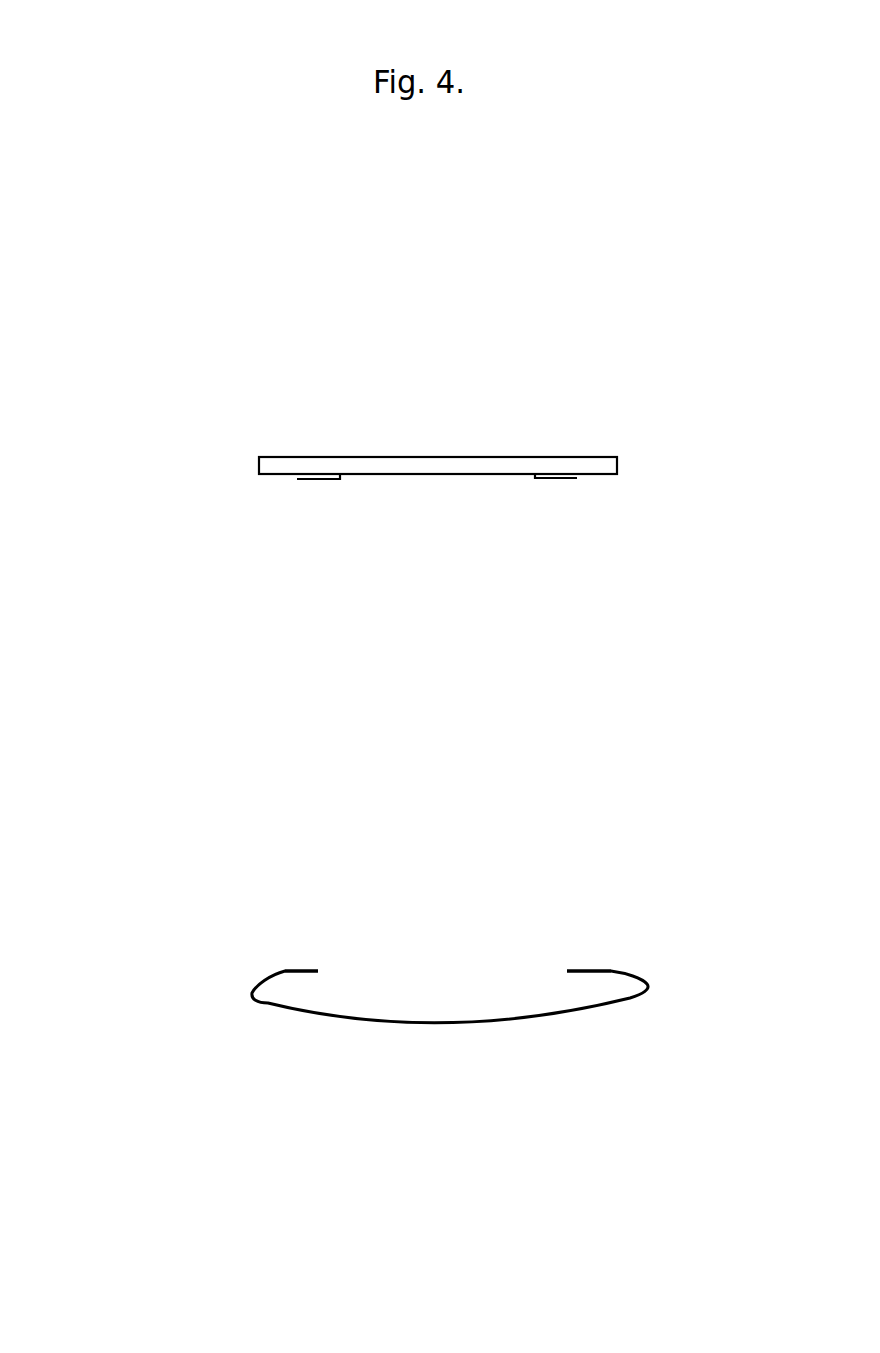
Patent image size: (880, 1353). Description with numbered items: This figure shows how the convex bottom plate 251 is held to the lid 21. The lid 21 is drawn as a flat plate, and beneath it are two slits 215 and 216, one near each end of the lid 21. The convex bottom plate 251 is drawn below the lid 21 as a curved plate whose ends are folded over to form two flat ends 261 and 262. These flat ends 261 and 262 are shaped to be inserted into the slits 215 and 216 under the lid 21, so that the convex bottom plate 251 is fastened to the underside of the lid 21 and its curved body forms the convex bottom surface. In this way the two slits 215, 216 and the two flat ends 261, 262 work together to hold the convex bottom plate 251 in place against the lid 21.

The lid 21 is at (390, 457).
The slit 215 is at (553, 480).
The slit 216 is at (318, 482).
The convex bottom plate 251 is at (452, 1022).
The flat end 261 is at (307, 968).
The flat end 262 is at (592, 972).